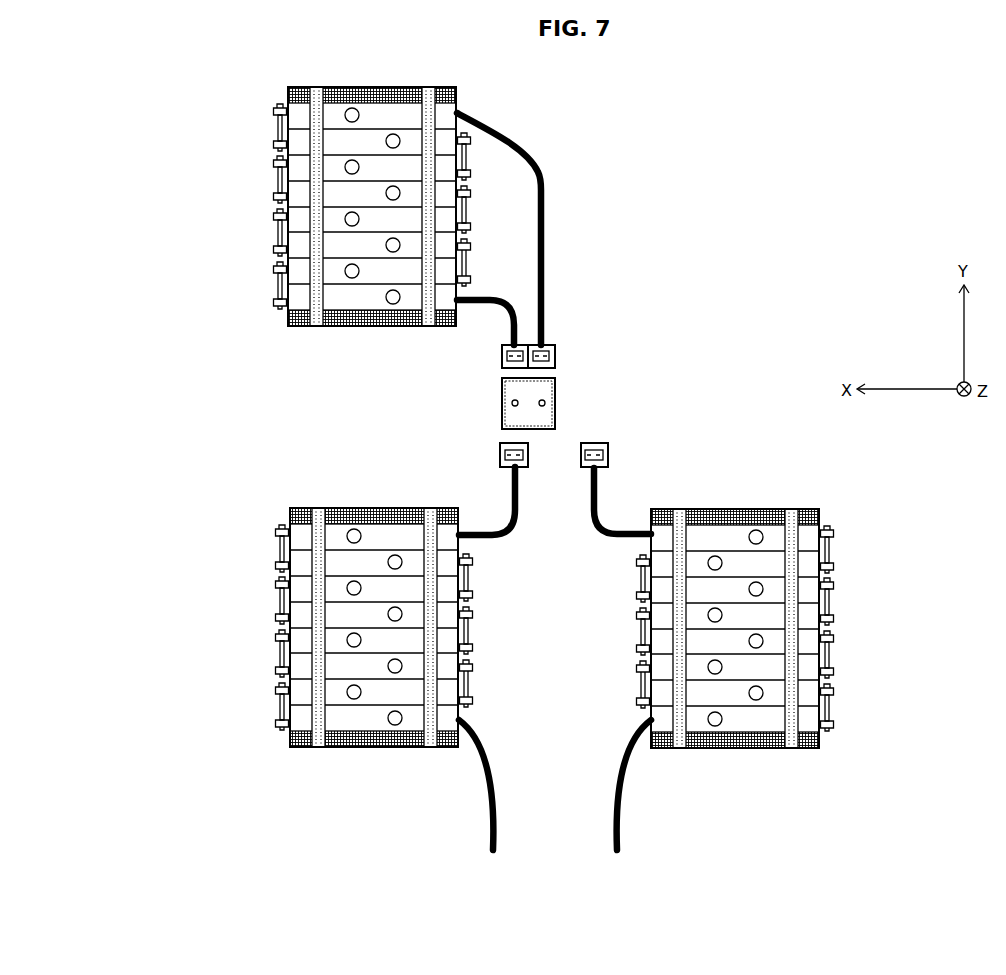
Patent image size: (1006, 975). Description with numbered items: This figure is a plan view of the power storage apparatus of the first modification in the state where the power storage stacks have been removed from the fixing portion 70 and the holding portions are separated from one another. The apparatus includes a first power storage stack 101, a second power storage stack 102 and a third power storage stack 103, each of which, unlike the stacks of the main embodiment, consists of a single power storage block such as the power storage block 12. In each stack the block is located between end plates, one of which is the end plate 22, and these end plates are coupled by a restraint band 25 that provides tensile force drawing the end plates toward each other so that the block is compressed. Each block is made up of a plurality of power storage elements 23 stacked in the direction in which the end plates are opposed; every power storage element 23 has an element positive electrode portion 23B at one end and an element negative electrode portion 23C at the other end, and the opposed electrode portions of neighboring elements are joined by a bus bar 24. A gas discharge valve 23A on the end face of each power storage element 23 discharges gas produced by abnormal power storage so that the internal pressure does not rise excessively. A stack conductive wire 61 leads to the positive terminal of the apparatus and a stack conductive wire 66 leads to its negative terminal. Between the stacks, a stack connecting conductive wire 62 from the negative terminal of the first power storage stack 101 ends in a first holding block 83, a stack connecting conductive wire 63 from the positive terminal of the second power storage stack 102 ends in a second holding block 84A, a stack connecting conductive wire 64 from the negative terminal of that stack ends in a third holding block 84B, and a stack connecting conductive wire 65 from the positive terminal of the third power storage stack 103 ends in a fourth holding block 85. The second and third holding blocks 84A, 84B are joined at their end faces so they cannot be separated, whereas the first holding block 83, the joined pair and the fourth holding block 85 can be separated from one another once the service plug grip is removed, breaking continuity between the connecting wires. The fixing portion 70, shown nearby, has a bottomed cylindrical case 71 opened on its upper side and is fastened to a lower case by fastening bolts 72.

The second power storage block 12 is at (466, 255).
The end plate 22 is at (370, 323).
The power storage element 23 is at (352, 303).
The gas discharge valve 23A is at (393, 307).
The element positive electrode portion 23B is at (280, 272).
The element negative electrode portion 23C is at (279, 306).
The bus bar 24 is at (280, 286).
The restraint band 25 is at (322, 108).
The stack conductive wire 61 is at (496, 780).
The stack connecting conductive wire 62 is at (508, 527).
The stack connecting conductive wire 63 is at (488, 299).
The stack connecting conductive wire 64 is at (538, 165).
The stack connecting conductive wire 65 is at (600, 505).
The stack conductive wire 66 is at (614, 780).
The fixing portion 70 is at (578, 405).
The case 71 is at (502, 418).
The fastening bolt 72 is at (545, 402).
The first holding block 83 is at (500, 456).
The second holding block 84A is at (502, 357).
The third holding block 84B is at (556, 352).
The fourth holding block 85 is at (607, 450).
The first power storage stack 101 is at (245, 615).
The second power storage stack 102 is at (240, 202).
The third power storage stack 103 is at (873, 625).